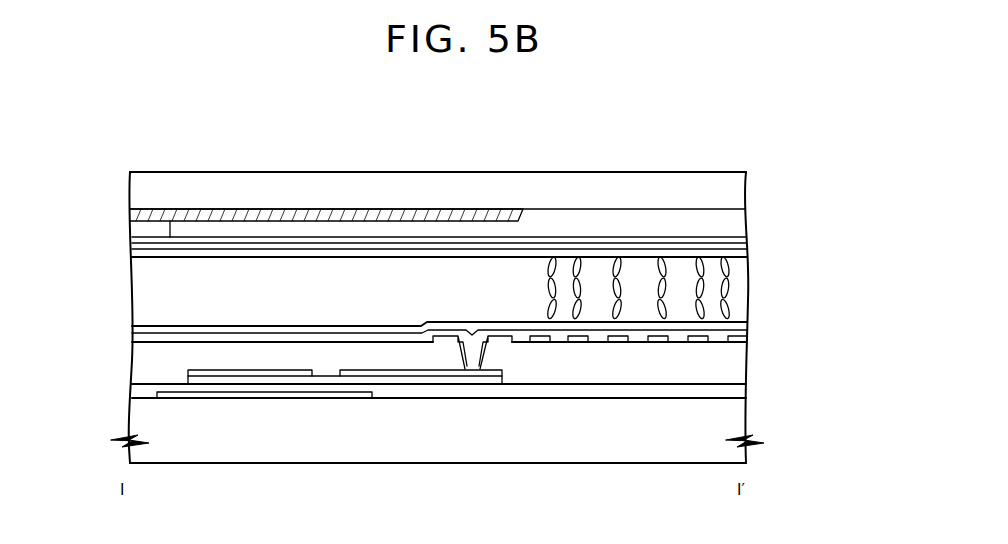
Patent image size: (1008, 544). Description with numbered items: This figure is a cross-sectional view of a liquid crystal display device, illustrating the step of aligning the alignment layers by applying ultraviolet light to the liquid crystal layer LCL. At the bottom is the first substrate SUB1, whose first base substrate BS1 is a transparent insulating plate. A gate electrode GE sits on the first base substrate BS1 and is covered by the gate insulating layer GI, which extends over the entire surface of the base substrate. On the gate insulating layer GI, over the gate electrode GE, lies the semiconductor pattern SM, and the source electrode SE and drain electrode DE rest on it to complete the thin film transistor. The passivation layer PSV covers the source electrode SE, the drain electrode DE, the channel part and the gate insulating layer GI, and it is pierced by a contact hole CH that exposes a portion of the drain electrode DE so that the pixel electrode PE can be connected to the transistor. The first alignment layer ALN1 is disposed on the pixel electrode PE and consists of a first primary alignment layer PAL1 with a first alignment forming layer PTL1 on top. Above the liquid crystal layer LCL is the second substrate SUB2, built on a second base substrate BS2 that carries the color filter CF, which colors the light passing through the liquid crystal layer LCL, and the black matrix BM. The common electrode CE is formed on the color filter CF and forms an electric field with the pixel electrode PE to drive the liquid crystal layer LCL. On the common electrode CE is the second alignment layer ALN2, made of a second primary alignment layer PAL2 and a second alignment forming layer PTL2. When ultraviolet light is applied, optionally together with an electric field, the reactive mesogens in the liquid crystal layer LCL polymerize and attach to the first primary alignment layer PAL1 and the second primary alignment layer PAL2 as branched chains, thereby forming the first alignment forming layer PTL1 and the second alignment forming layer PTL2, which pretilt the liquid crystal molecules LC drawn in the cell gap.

The first substrate SUB1 is at (110, 340).
The second substrate SUB2 is at (119, 172).
The first base substrate BS1 is at (735, 425).
The second base substrate BS2 is at (735, 190).
The gate electrode GE is at (206, 396).
The gate insulating layer GI is at (735, 392).
The semiconductor pattern SM is at (308, 378).
The source electrode SE is at (257, 372).
The drain electrode DE is at (366, 372).
The passivation layer PSV is at (733, 357).
The contact hole CH is at (487, 347).
The pixel electrode PE is at (540, 342).
The first primary alignment layer PAL1 is at (738, 330).
The first alignment forming layer PTL1 is at (738, 322).
The first alignment layer ALN1 is at (823, 300).
The liquid crystal layer LCL is at (140, 292).
The liquid crystal molecules LC is at (700, 257).
The second alignment forming layer PTL2 is at (738, 259).
The second primary alignment layer PAL2 is at (738, 252).
The second alignment layer ALN2 is at (823, 250).
The common electrode CE is at (738, 242).
The color filter CF is at (738, 225).
The black matrix BM is at (351, 212).